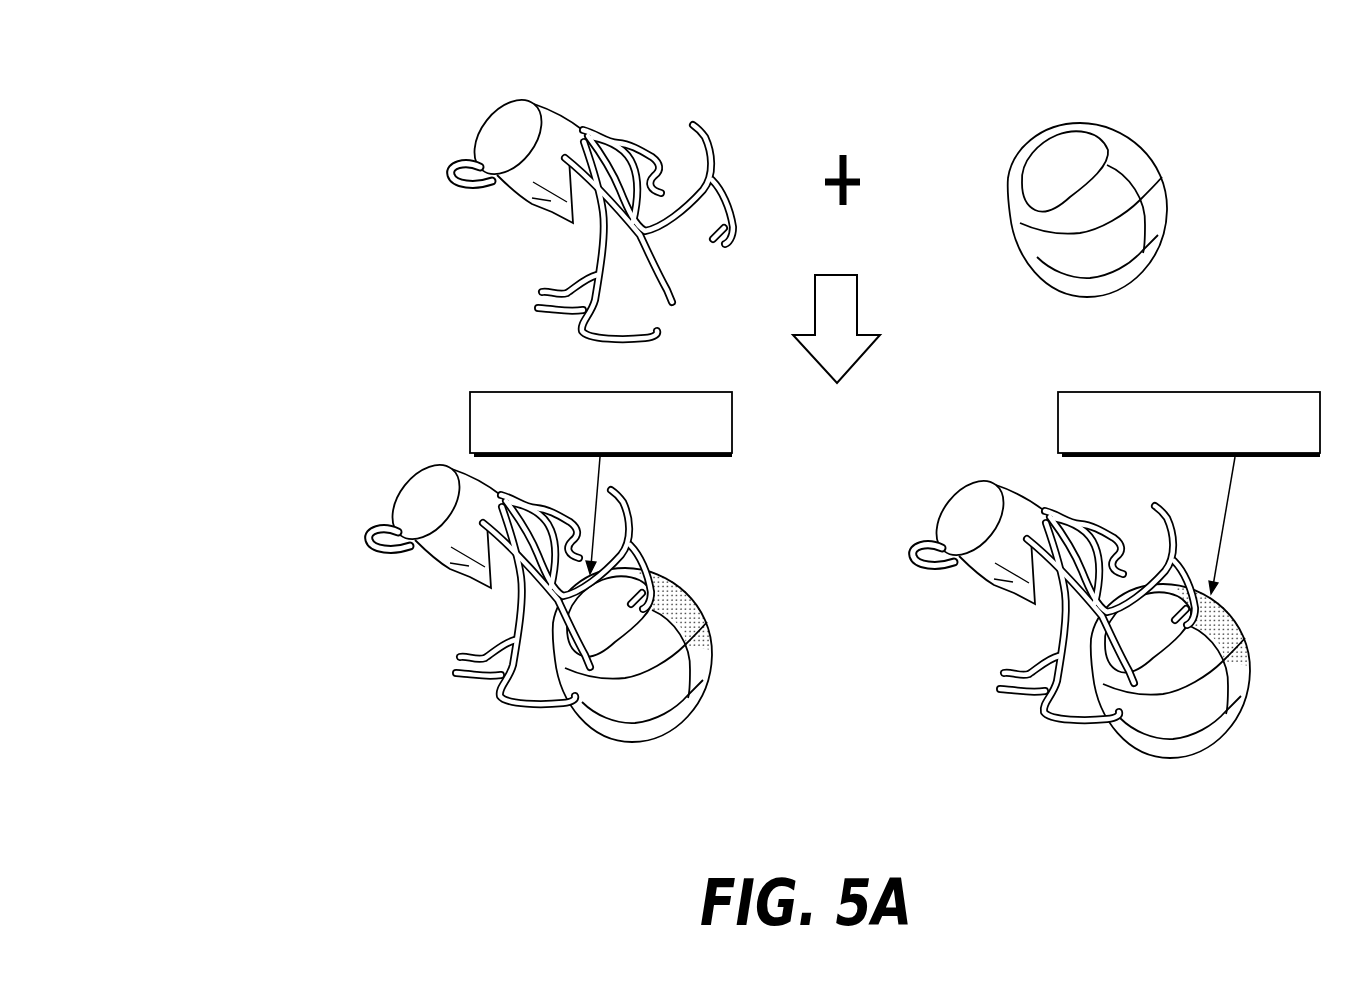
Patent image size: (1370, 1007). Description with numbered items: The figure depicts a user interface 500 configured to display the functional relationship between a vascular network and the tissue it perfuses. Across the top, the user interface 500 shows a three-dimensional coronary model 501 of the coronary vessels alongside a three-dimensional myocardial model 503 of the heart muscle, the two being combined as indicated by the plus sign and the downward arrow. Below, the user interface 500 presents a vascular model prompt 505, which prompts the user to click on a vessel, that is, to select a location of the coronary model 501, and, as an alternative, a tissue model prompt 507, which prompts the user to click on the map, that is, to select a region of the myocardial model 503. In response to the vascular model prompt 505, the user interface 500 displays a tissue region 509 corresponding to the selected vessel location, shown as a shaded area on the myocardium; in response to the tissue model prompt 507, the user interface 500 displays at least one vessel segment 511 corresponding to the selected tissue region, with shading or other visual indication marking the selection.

The user interface 500 is at (283, 101).
The coronary model 501 is at (482, 137).
The myocardial model 503 is at (1162, 177).
The vascular model prompt 505 is at (470, 415).
The tissue model prompt 507 is at (1227, 392).
The tissue region 509 is at (612, 493).
The vessel segment 511 is at (1253, 621).